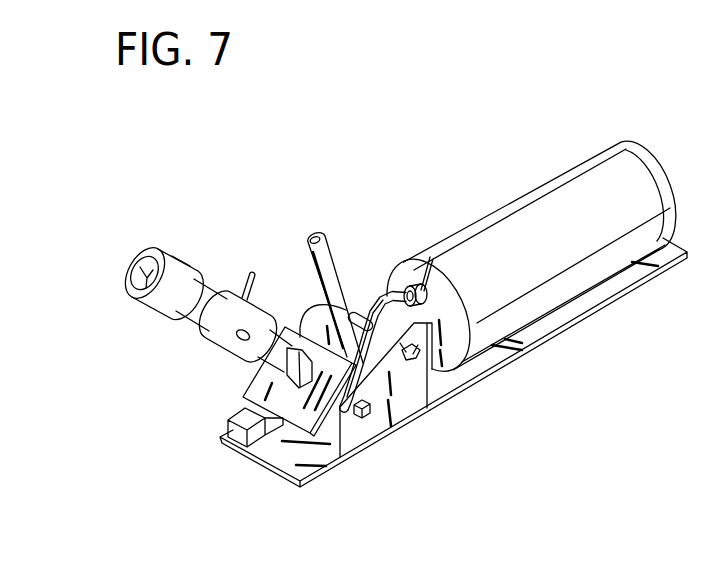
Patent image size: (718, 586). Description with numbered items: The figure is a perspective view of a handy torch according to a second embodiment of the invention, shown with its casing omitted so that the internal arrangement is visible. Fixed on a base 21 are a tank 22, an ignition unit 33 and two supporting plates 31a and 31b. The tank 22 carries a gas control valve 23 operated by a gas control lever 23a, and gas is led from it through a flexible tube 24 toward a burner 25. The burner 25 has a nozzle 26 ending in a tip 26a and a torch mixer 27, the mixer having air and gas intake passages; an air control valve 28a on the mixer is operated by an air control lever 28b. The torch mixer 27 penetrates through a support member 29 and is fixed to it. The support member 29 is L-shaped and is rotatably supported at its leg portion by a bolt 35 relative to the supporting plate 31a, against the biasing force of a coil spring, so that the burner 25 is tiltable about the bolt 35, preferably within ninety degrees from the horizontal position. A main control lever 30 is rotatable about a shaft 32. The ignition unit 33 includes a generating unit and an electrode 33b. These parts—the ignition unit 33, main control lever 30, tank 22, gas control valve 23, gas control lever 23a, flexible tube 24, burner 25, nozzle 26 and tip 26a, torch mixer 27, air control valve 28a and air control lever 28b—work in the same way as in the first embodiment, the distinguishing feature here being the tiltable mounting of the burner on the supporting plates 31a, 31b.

The base 21 is at (627, 287).
The tank 22 is at (565, 177).
The gas control valve 23 is at (430, 297).
The gas control lever 23a is at (429, 262).
The flexible tube 24 is at (380, 310).
The burner 25 is at (186, 257).
The nozzle 26 is at (156, 311).
The tip 26a is at (136, 270).
The torch mixer 27 is at (263, 377).
The collar 28a is at (240, 341).
The air control lever 28b is at (243, 271).
The support member 29 is at (300, 423).
The main control lever 30 is at (321, 237).
The supporting plate 31a is at (400, 410).
The supporting plate 31b is at (316, 326).
The shaft 32 is at (412, 361).
The ignition unit 33 is at (228, 428).
The electrode 33b is at (131, 296).
The bolt 35 is at (362, 419).